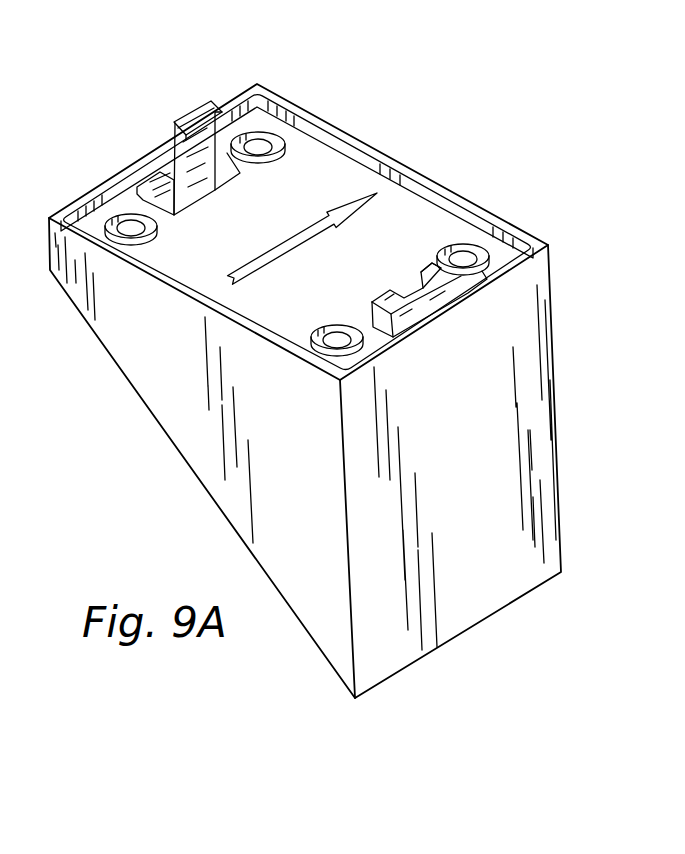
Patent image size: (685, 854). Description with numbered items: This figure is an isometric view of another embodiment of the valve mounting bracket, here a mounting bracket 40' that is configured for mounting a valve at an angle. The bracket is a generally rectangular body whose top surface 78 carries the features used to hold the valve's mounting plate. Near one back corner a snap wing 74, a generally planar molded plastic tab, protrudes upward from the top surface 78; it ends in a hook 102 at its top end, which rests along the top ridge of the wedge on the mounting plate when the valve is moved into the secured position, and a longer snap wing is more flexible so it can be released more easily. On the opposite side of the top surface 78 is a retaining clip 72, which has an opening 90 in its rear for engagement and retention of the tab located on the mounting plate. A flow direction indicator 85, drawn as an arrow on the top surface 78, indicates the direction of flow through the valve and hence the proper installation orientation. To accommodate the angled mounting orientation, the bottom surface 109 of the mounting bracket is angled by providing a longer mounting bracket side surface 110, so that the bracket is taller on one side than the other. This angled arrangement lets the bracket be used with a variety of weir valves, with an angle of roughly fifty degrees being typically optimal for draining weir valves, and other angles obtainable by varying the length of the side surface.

The mounting bracket 40' is at (357, 391).
The top surface 78 is at (323, 177).
The hook 102 is at (190, 113).
The snap wing 74 is at (168, 164).
The flow direction indicator 85 is at (298, 238).
The retaining clip 72 is at (450, 287).
The opening 90 is at (413, 283).
The bottom surface 109 is at (178, 447).
The side surface 110 is at (447, 467).